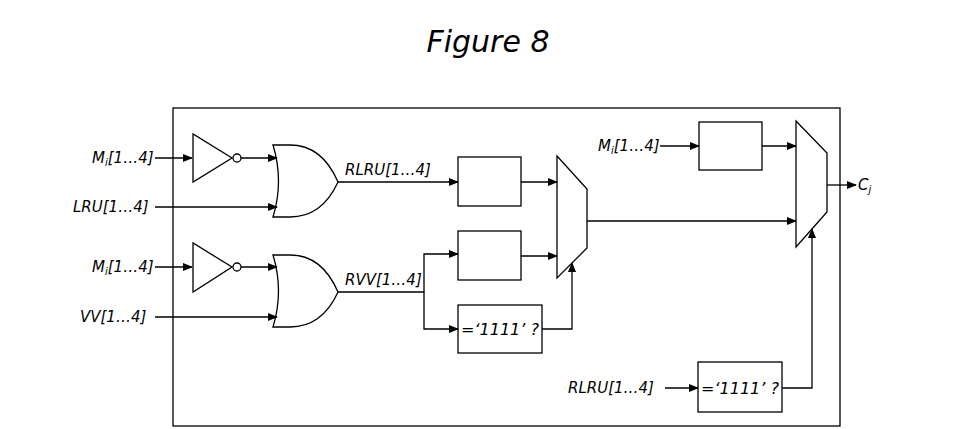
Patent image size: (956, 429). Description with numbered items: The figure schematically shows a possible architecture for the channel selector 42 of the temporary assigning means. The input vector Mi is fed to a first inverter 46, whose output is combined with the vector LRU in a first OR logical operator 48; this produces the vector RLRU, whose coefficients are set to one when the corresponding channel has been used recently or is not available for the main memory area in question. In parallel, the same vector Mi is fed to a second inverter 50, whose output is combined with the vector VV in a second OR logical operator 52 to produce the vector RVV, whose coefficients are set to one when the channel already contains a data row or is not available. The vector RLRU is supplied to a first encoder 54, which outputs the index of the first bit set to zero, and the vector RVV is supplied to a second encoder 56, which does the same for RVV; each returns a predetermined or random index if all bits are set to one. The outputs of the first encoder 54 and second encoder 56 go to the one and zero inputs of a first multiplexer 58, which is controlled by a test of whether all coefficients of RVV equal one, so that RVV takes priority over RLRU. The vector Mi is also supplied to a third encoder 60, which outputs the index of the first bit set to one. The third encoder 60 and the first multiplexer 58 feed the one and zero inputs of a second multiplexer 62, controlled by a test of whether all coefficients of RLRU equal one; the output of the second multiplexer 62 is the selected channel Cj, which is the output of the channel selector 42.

The channel selector 42 is at (633, 108).
The first inverter 46 is at (209, 151).
The first OR logical operator 48 is at (305, 181).
The second inverter 50 is at (209, 261).
The second OR logical operator 52 is at (305, 291).
The first encoder 54 is at (507, 181).
The second encoder 56 is at (507, 255).
The first multiplexer 58 is at (588, 207).
The third encoder 60 is at (728, 146).
The second multiplexer 62 is at (796, 176).